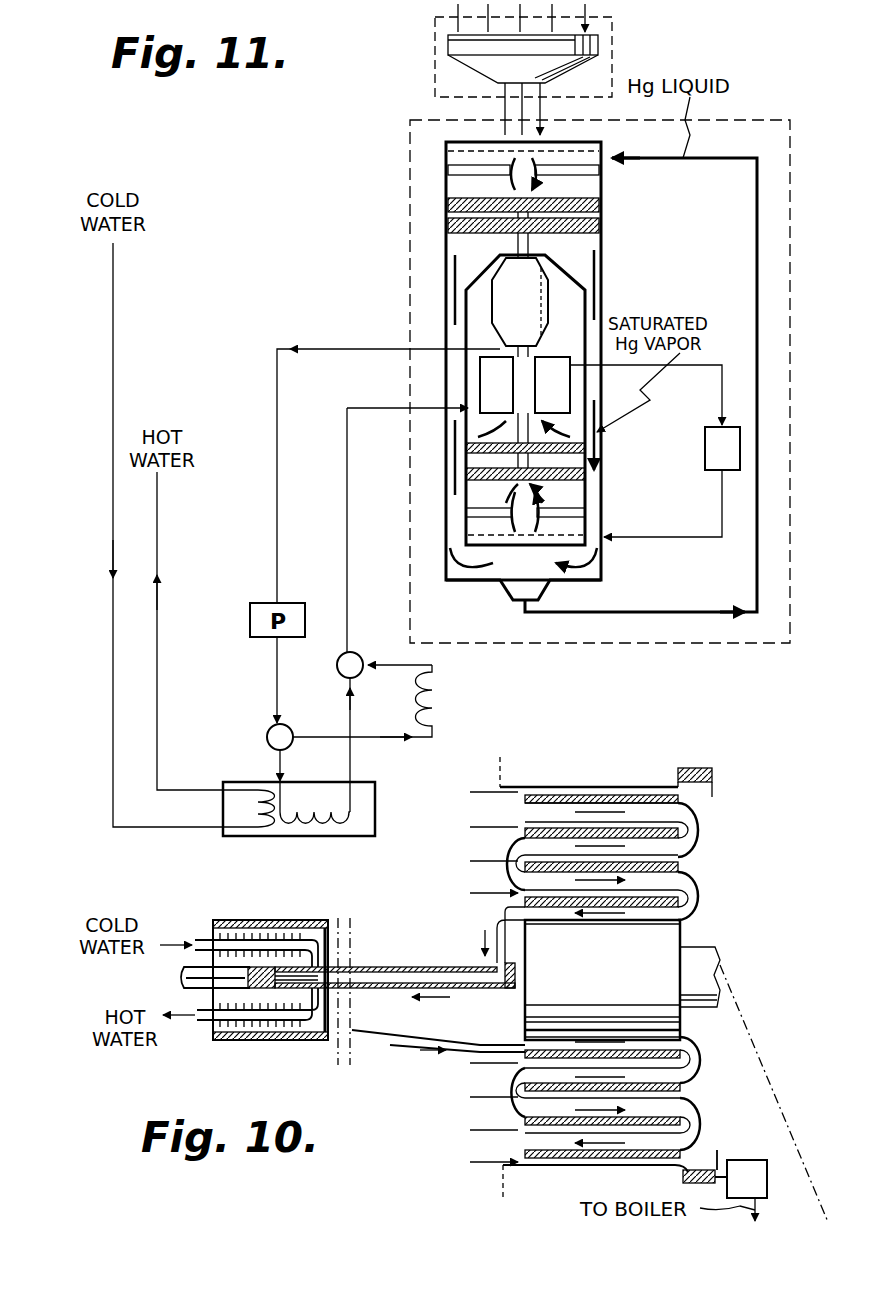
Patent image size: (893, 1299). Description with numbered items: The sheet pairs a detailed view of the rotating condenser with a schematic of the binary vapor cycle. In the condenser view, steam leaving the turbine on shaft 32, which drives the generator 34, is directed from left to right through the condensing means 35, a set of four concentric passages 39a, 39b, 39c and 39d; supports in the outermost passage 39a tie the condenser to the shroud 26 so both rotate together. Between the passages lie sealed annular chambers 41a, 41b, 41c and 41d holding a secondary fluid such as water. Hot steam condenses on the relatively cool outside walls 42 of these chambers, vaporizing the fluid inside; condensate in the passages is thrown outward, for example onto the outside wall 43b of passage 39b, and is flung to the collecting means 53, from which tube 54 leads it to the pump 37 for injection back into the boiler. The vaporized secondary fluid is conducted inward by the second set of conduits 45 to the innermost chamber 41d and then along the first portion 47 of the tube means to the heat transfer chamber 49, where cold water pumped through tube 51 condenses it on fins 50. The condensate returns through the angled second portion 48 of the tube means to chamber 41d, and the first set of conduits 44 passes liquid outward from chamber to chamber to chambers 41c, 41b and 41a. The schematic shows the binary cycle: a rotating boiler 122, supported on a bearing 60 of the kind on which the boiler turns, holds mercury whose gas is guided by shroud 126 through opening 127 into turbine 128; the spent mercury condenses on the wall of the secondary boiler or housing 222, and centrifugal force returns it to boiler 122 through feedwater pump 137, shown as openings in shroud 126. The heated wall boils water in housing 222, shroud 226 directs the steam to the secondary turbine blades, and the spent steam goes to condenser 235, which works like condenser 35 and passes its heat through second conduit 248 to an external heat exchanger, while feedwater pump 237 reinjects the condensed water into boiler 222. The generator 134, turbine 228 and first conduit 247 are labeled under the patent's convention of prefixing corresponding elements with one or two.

In FIG. 11, the bearing 60 is at (455, 43).
In FIG. 11, the boiler 122 is at (456, 140).
In FIG. 11, the shroud 126 is at (448, 168).
In FIG. 11, the opening 127 is at (535, 153).
In FIG. 11, the turbine 128 is at (600, 218).
In FIG. 11, the body 134 is at (505, 300).
In FIG. 11, the condenser 235 is at (492, 381).
In FIG. 11, the lower disks 228 is at (466, 471).
In FIG. 11, the shroud 226 is at (470, 512).
In FIG. 11, the secondary boiler or housing 222 is at (588, 548).
In FIG. 11, the feedwater pump 137 is at (510, 597).
In FIG. 11, the feedwater pump 237 is at (705, 462).
In FIG. 11, the line 247 is at (320, 348).
In FIG. 11, the second conduit 248 is at (347, 426).
In FIG. 10, the shroud 26 is at (580, 785).
In FIG. 10, the outside wall 42 is at (535, 787).
In FIG. 10, the collecting means 53 is at (697, 775).
In FIG. 10, the condensing means 35 is at (615, 832).
In FIG. 10, the concentric passage 39a is at (622, 790).
In FIG. 10, the concentric passage 39b is at (660, 827).
In FIG. 10, the concentric passage 39c is at (545, 863).
In FIG. 10, the inner concentric passage 39d is at (545, 897).
In FIG. 10, the second set of conduits 45 is at (700, 833).
In FIG. 10, the outside wall 43b is at (548, 828).
In FIG. 10, the generator 34 is at (602, 980).
In FIG. 10, the shaft 32 is at (718, 963).
In FIG. 10, the first portion of tube means 47 is at (481, 989).
In FIG. 10, the second portion of tube means 48 is at (375, 1035).
In FIG. 10, the annular chamber 41a is at (545, 1143).
In FIG. 10, the annular chamber 41b is at (545, 1108).
In FIG. 10, the annular chamber 41c is at (662, 1076).
In FIG. 10, the innermost annular chamber 41d is at (662, 1041).
In FIG. 10, the first set of conduits 44 is at (700, 1056).
In FIG. 10, the tube 54 is at (720, 1152).
In FIG. 10, the pump 37 is at (767, 1183).
In FIG. 10, the heat transfer chamber 49 is at (290, 1040).
In FIG. 10, the tube 51 is at (203, 940).
In FIG. 10, the fins 50 is at (308, 940).